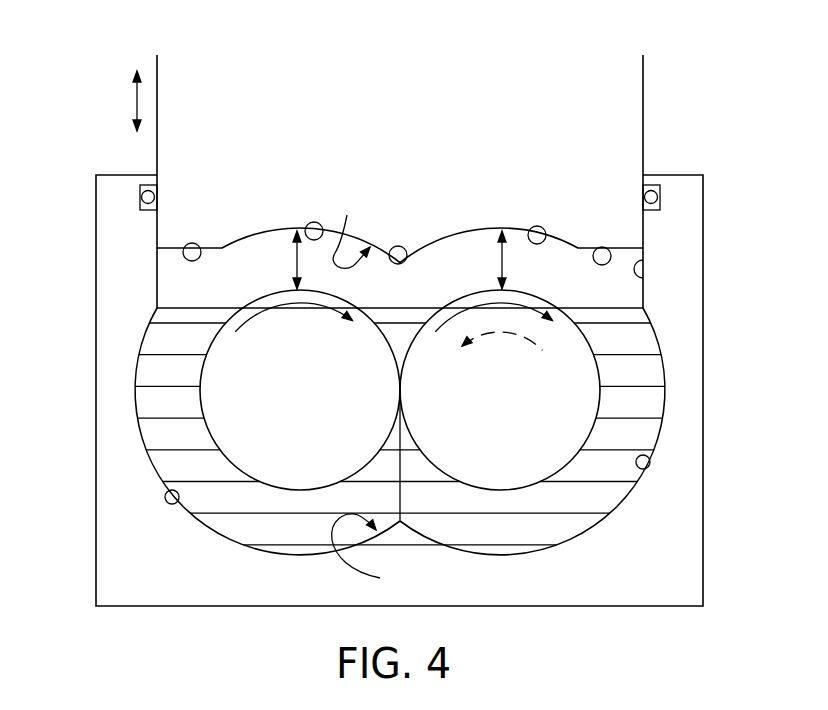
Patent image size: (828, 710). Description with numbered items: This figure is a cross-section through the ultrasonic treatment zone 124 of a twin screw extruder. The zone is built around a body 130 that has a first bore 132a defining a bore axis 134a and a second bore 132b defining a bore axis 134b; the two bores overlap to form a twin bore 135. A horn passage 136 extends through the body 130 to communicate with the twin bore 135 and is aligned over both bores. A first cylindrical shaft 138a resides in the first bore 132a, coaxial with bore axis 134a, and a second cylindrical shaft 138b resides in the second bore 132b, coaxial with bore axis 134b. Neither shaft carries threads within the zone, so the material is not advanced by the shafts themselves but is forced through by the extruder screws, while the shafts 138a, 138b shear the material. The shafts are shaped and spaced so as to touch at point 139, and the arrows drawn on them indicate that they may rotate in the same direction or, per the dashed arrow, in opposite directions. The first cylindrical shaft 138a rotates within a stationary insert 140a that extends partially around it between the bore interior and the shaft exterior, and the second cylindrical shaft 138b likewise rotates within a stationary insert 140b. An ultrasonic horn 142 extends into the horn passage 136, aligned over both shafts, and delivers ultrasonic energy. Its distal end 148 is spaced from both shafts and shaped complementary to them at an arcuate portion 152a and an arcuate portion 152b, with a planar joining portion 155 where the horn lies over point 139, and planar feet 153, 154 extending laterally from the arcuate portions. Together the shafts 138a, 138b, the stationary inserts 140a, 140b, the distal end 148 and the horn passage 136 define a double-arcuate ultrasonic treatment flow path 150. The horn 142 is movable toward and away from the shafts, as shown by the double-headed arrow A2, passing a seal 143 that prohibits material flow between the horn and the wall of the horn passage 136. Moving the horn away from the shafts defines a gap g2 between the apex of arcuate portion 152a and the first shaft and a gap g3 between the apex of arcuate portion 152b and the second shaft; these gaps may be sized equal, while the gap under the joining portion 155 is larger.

The ultrasonic treatment zone 124 is at (85, 128).
The double-headed arrow A2 is at (137, 99).
The ultrasonic horn 142 is at (624, 92).
The seal 143 is at (651, 195).
The planar foot 153 is at (191, 243).
The arcuate portion 152a is at (311, 223).
The distal end 148 is at (350, 231).
The planar joining portion 155 is at (392, 246).
The arcuate portion 152b is at (533, 227).
The planar foot 154 is at (594, 247).
The horn passage 136 is at (650, 263).
The body 130 is at (692, 290).
The double-arcuate ultrasonic treatment flow path 150 is at (157, 293).
The gap g2 is at (297, 256).
The gap g3 is at (502, 258).
The first cylindrical shaft 138a is at (220, 425).
The second cylindrical shaft 138b is at (590, 378).
The point 139 is at (401, 390).
The bore axis 134a is at (298, 391).
The bore axis 134b is at (500, 391).
The first bore 132a is at (167, 496).
The second bore 132b is at (649, 456).
The stationary insert 140a is at (231, 536).
The stationary insert 140b is at (557, 535).
The twin bore 135 is at (376, 552).